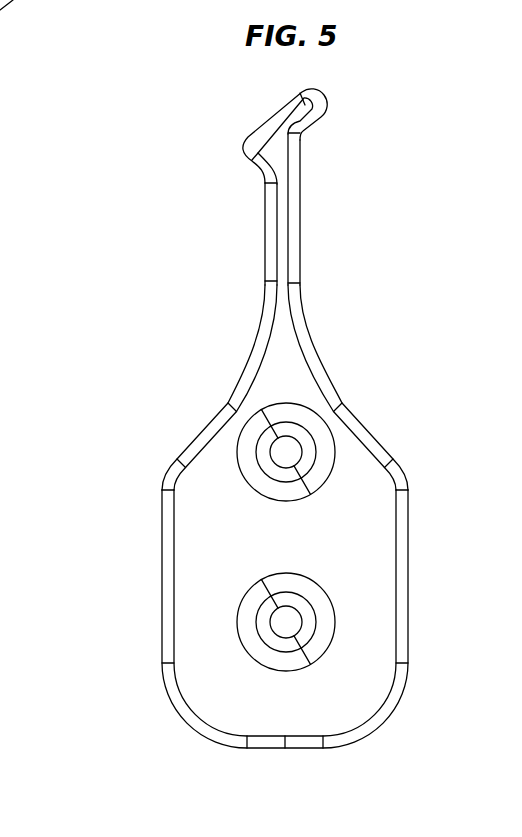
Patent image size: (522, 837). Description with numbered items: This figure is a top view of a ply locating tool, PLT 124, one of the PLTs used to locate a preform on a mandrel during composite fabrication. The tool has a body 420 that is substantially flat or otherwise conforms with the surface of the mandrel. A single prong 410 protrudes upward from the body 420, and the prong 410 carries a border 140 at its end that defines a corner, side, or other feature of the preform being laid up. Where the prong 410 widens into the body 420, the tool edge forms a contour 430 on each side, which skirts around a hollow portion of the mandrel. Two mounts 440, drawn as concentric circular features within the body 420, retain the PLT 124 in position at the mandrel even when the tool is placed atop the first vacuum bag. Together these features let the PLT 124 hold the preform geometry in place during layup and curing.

The PLT 124 is at (83, 543).
The border 140 is at (243, 122).
The prong 410 is at (263, 230).
The body 420 is at (378, 597).
The contour 430 is at (241, 348).
The mount 440 is at (268, 487).